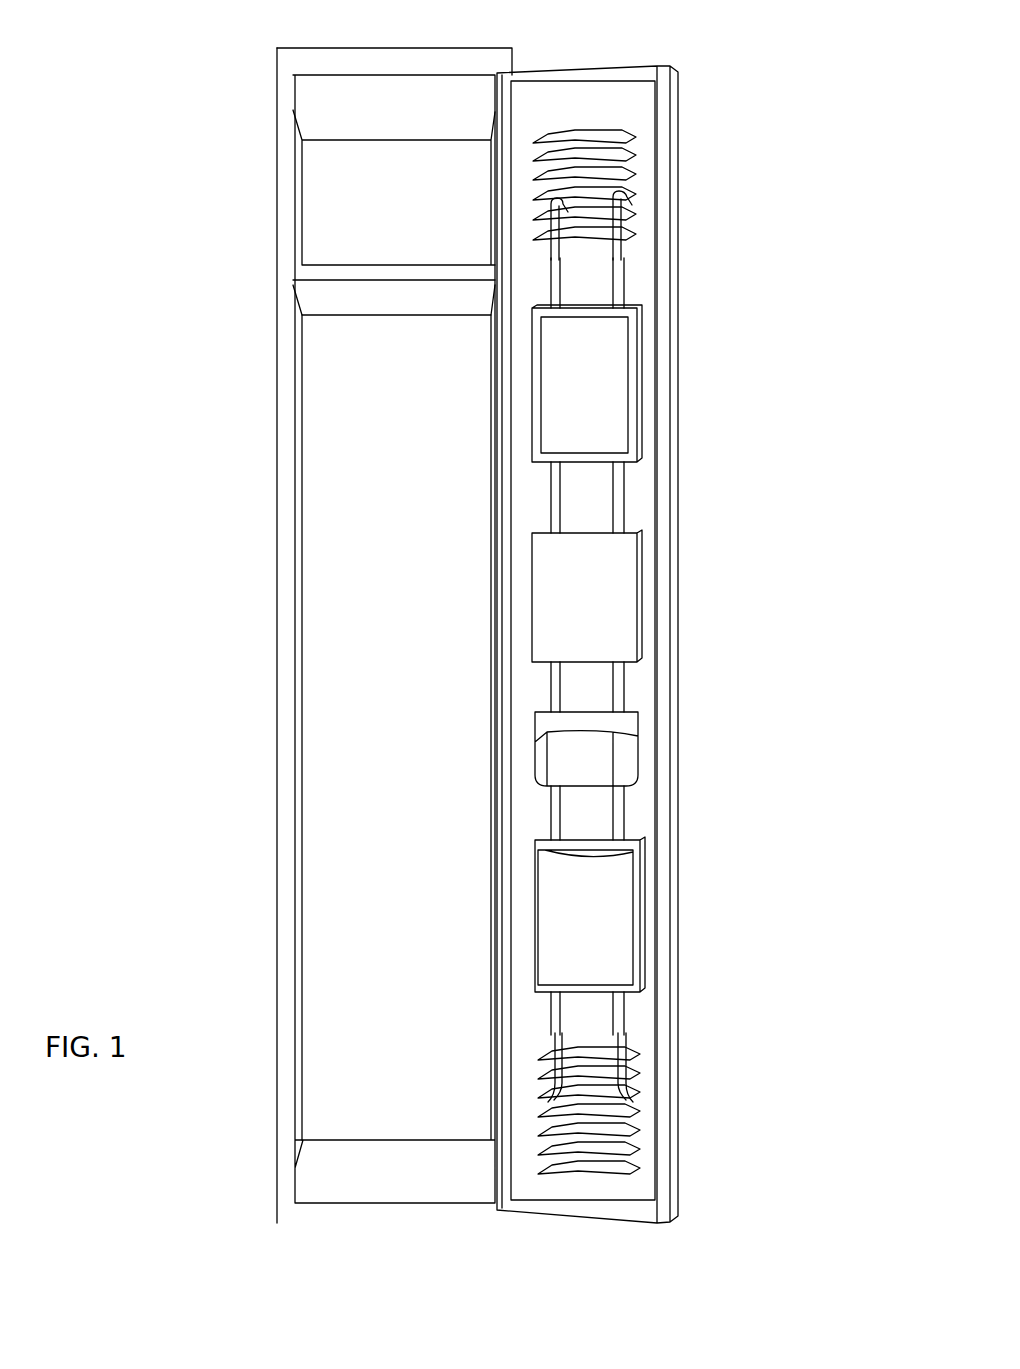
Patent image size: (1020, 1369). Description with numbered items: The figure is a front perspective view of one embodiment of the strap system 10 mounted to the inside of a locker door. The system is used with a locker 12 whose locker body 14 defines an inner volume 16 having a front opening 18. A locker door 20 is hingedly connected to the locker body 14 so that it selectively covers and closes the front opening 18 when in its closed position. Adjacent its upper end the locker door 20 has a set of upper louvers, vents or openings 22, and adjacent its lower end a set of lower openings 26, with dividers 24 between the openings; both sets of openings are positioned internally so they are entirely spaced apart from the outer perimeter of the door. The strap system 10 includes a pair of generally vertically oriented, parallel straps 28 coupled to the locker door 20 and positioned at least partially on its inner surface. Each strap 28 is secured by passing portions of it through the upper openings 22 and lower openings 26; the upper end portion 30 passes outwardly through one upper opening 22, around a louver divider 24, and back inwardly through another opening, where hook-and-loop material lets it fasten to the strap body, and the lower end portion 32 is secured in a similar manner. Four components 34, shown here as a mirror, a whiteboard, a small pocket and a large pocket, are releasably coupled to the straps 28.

The strap system 10 is at (642, 282).
The locker 12 is at (312, 545).
The locker body 14 is at (285, 416).
The inner volume 16 is at (385, 345).
The front opening 18 is at (335, 492).
The locker door 20 is at (646, 506).
The upper openings 22 is at (600, 130).
The dividers 24 is at (605, 143).
The lower openings 26 is at (620, 1158).
The straps 28 is at (560, 507).
The upper end portion 30 is at (549, 247).
The lower end portion 32 is at (555, 1045).
The components 34 is at (640, 358).